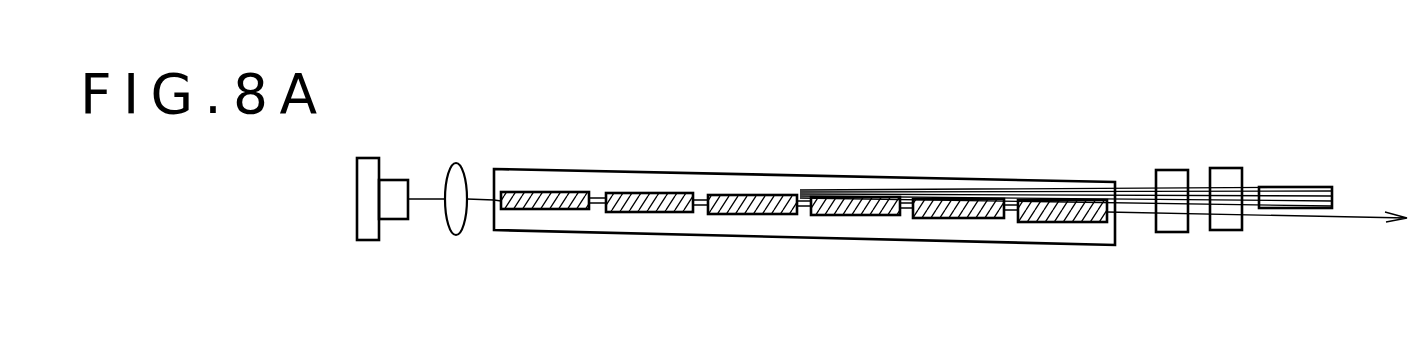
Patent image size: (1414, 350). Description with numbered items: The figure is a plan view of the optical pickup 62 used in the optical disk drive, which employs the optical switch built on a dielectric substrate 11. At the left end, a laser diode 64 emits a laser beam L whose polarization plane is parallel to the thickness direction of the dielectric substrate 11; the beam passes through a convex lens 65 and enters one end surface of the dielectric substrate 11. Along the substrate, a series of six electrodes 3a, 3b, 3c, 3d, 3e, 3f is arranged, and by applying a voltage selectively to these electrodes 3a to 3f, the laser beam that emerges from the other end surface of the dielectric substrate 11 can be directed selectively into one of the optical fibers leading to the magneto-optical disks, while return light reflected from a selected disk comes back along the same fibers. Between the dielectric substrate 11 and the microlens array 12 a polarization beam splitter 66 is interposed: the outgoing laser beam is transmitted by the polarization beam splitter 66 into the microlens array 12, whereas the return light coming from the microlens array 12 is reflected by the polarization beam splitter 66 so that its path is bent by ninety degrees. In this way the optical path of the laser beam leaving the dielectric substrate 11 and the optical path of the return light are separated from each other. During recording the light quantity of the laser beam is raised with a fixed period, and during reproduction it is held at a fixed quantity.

The laser diode 64 is at (366, 240).
The light beam L is at (427, 199).
The convex lens 65 is at (457, 230).
The optical pickup 62 is at (542, 137).
The electrode 3a is at (542, 210).
The electrode 3b is at (653, 212).
The electrode 3c is at (755, 214).
The electrode 3d is at (850, 215).
The electrode 3e is at (962, 218).
The electrode 3f is at (1060, 222).
The dielectric substrate 11 is at (828, 180).
The polarization beam splitter 66 is at (1168, 232).
The microlens array 12 is at (1223, 230).